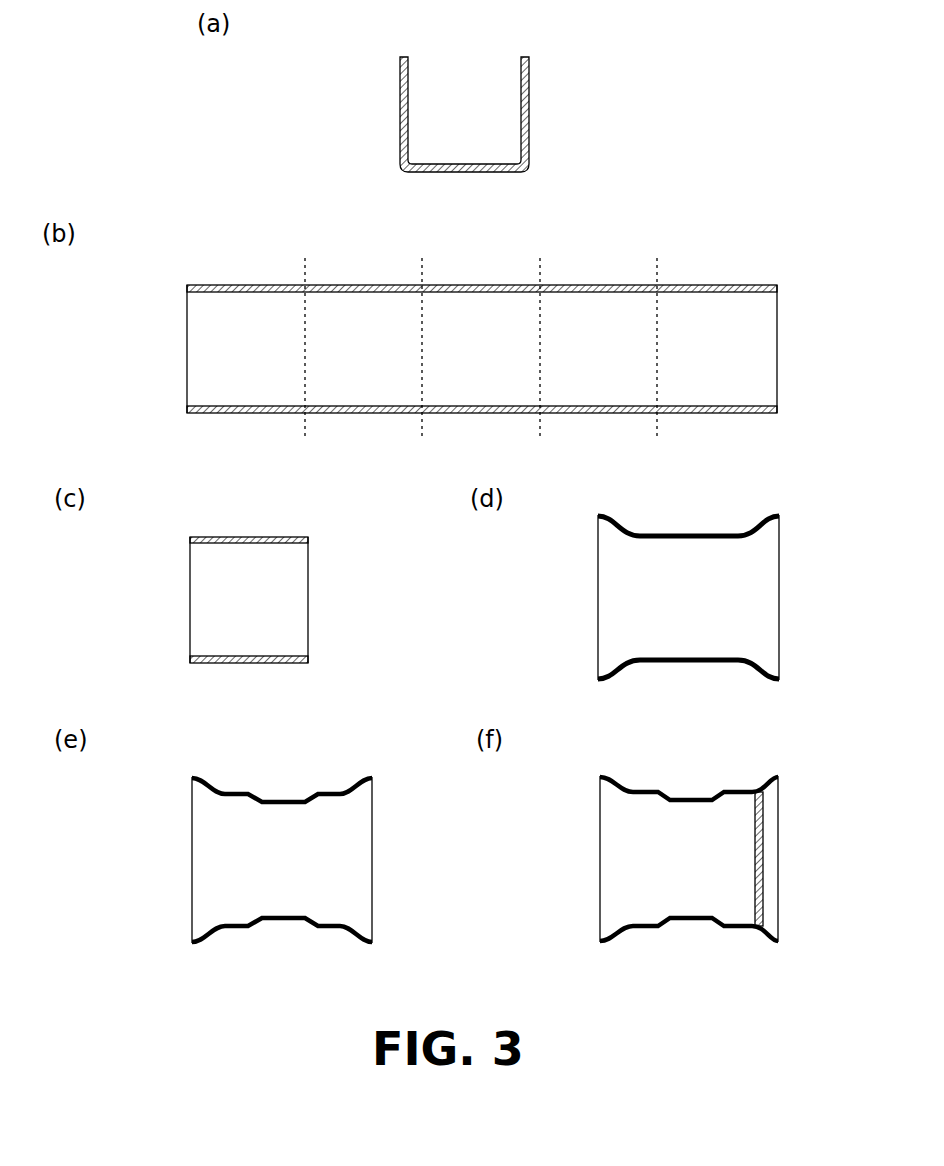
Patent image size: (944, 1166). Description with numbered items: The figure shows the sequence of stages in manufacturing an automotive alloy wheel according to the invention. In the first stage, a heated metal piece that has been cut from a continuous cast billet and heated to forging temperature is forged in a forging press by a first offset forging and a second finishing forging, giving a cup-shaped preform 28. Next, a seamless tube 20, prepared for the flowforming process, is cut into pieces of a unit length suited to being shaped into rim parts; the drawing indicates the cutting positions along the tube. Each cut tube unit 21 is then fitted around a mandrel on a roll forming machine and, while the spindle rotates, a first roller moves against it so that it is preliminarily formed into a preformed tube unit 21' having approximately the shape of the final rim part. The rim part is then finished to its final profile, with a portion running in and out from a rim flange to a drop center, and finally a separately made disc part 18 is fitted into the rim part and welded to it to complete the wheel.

The cup-shaped preform 28 is at (531, 108).
The seamless tube 20 is at (465, 285).
The tube unit 21 is at (266, 569).
The preformed tube unit 21' is at (688, 571).
The disc part 18 is at (764, 832).